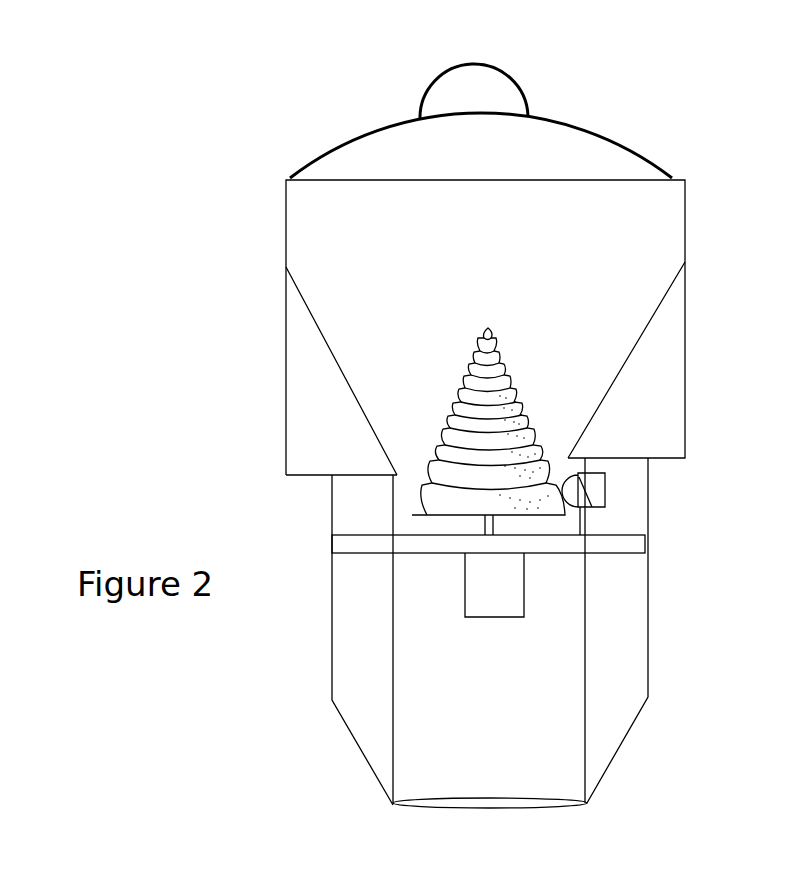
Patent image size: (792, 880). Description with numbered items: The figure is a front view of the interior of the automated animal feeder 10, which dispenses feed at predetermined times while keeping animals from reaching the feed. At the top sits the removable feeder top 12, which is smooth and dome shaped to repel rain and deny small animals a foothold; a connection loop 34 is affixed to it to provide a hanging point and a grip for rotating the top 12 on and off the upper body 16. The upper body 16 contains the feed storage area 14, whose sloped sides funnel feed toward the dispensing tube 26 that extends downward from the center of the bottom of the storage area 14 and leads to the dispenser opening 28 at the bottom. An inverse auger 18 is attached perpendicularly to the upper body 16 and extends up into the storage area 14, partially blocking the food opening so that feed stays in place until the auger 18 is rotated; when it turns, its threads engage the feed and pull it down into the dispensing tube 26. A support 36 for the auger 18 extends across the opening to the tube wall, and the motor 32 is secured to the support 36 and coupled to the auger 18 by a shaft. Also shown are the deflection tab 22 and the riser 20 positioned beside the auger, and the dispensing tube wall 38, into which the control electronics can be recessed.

The feeder 10 is at (185, 252).
The feeder top 12 is at (355, 150).
The feed storage area 14 is at (485, 344).
The upper body 16 is at (688, 331).
The auger 18 is at (435, 470).
The riser 20 is at (597, 515).
The deflection tab 22 is at (575, 489).
The dispensing tube 26 is at (420, 755).
The dispenser opening 28 is at (489, 808).
The motor 32 is at (487, 612).
The connection loop 34 is at (523, 85).
The support 36 is at (345, 550).
The dispensing tube wall 38 is at (627, 643).